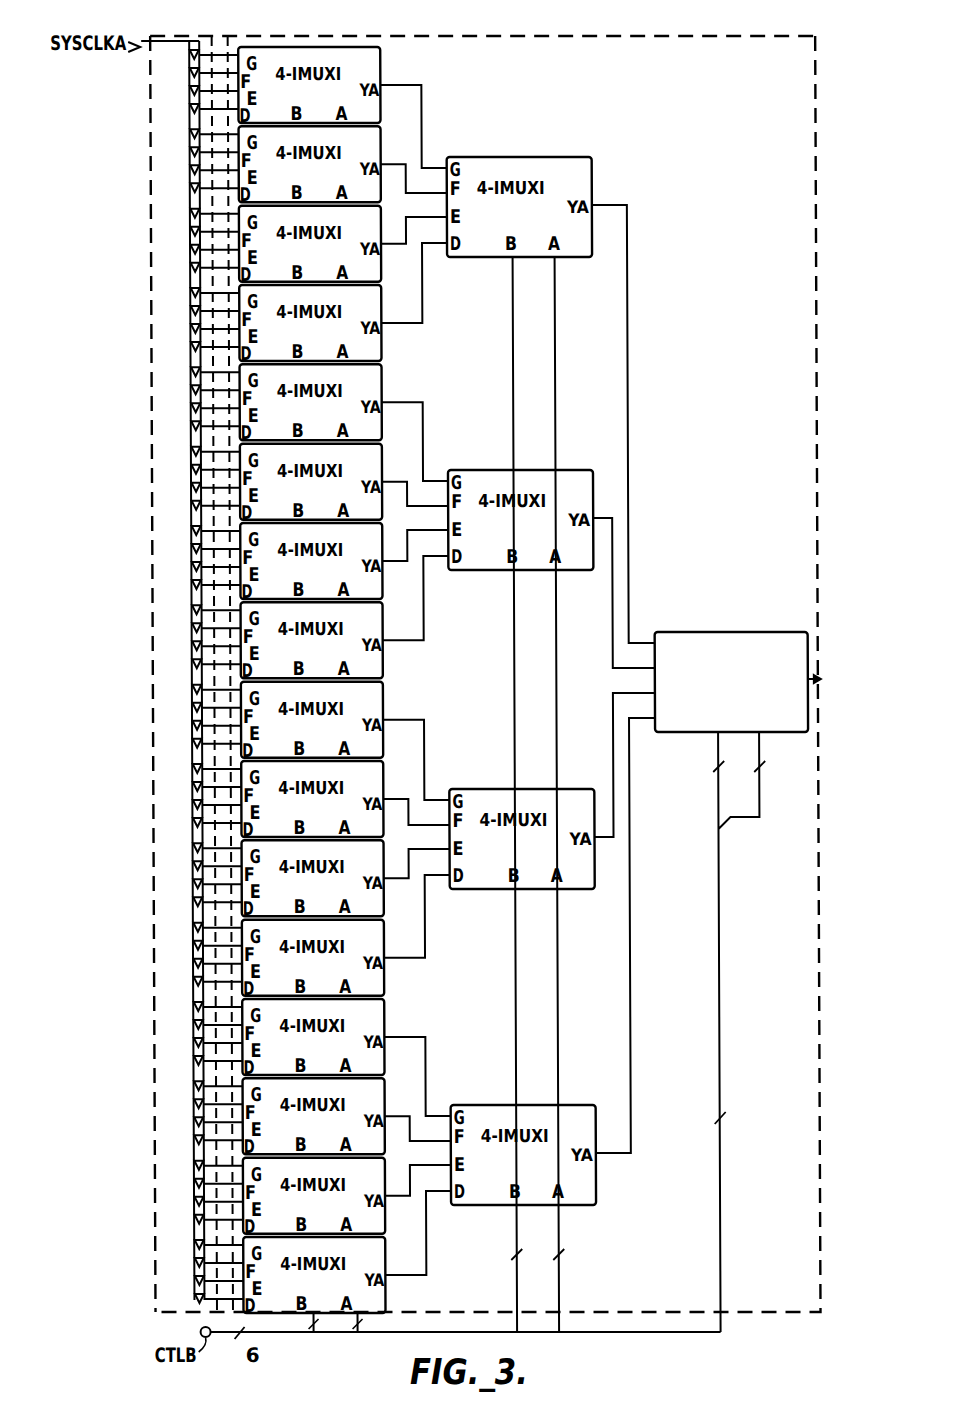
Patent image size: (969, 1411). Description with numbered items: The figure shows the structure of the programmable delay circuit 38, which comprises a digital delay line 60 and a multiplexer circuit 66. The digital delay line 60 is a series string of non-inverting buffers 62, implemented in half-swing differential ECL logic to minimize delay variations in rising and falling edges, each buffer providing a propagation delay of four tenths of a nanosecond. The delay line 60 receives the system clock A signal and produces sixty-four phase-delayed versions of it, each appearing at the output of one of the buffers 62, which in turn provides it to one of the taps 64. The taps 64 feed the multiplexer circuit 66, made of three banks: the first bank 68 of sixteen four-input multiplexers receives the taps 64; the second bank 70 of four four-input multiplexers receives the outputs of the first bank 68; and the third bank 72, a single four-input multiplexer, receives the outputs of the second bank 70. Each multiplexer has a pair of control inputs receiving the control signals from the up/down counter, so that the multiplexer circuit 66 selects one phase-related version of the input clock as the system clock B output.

The programmable delay circuit 38 is at (620, 26).
The digital delay line 60 is at (150, 432).
The buffers 62 is at (189, 210).
The taps 64 is at (222, 42).
The multiplexer circuit 66 is at (737, 34).
The first bank of multiplexers 68 is at (351, 46).
The second bank of multiplexers 70 is at (542, 158).
The third bank of multiplexers 72 is at (718, 632).